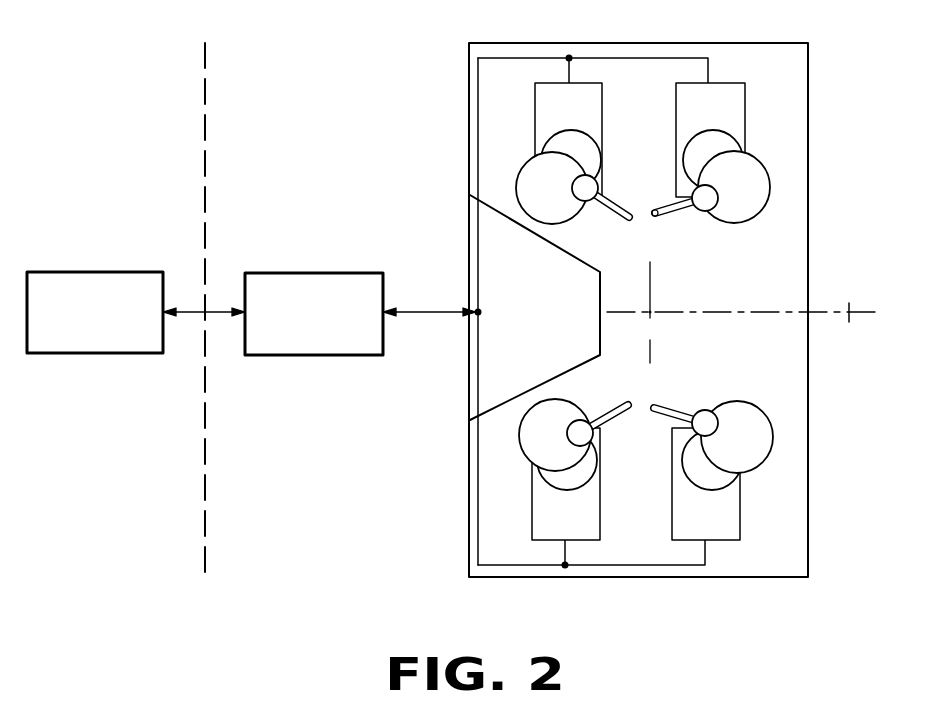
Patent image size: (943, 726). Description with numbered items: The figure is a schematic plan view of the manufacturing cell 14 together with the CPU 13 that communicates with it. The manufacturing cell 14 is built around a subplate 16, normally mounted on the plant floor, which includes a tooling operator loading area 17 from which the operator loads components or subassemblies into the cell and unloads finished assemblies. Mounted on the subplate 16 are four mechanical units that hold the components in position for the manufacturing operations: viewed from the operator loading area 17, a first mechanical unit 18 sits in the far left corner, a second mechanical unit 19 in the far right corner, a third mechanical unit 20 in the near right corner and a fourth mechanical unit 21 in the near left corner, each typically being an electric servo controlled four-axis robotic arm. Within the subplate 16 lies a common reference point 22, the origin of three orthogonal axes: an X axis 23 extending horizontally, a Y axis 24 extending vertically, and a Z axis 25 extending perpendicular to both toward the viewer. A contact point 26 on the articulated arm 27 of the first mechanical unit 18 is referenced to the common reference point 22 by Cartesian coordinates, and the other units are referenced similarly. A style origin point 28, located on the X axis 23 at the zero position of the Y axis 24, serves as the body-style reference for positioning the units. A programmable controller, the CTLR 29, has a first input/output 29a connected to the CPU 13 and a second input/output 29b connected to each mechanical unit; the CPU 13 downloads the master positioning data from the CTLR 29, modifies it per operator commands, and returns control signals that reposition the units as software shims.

The CPU 13 is at (82, 275).
The manufacturing cell 14 is at (304, 118).
The subplate 16 is at (488, 552).
The tooling operator loading area 17 is at (493, 267).
The first mechanical unit 18 is at (735, 169).
The second mechanical unit 19 is at (752, 486).
The third mechanical unit 20 is at (519, 465).
The fourth mechanical unit 21 is at (526, 146).
The common reference point 22 is at (662, 306).
The X axis 23 is at (747, 315).
The Y axis 24 is at (652, 342).
The Z axis 25 is at (650, 312).
The contact point 26 is at (650, 206).
The articulated arm 27 is at (678, 217).
The style origin point 28 is at (850, 322).
The CTLR 29 is at (318, 273).
The first input/output 29a is at (243, 318).
The second input/output 29b is at (388, 317).